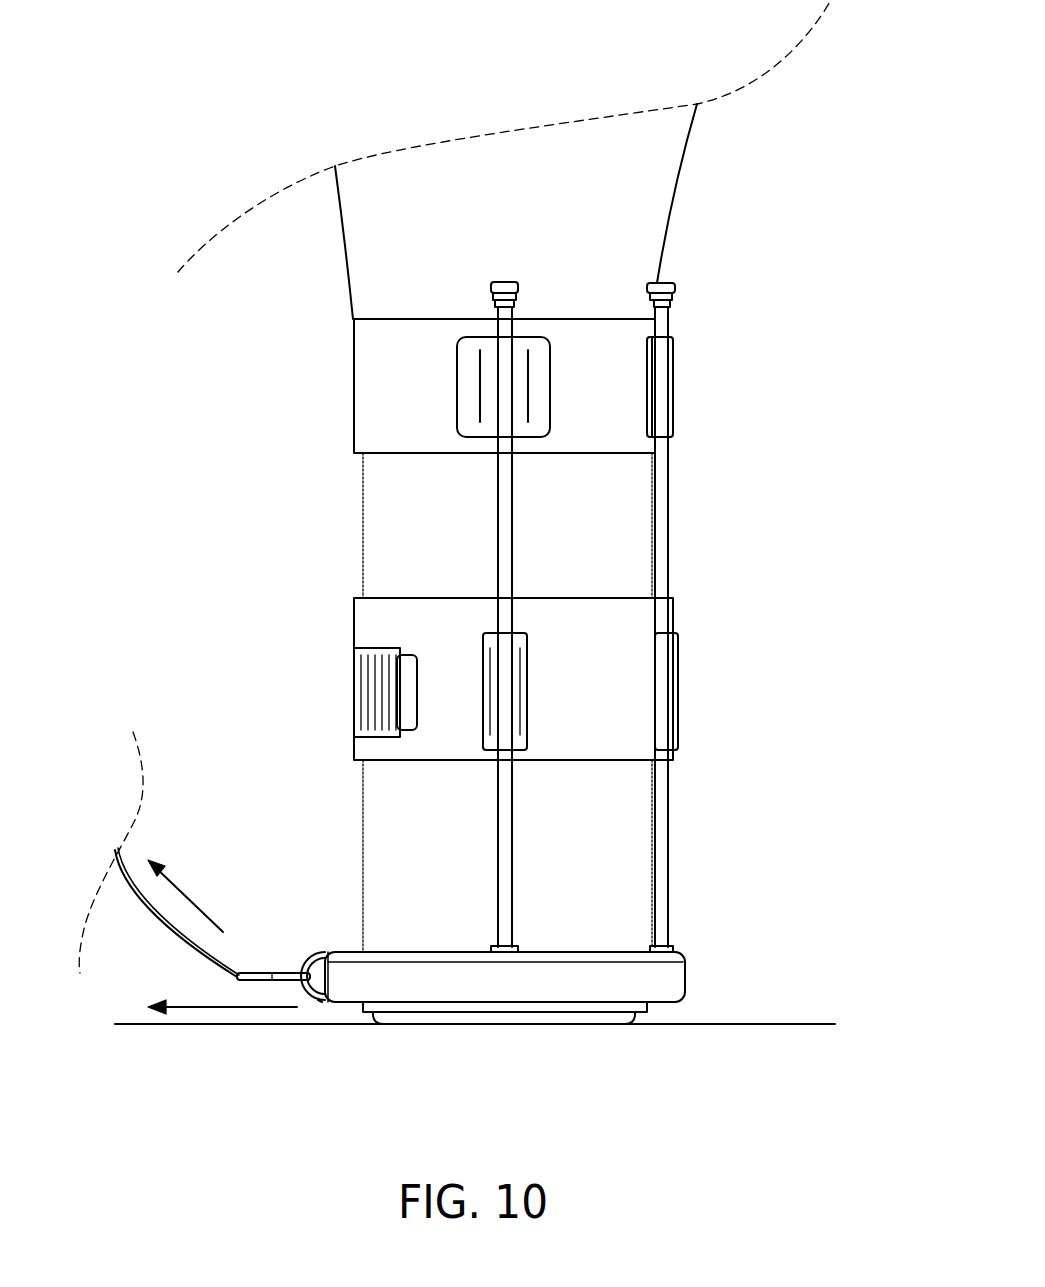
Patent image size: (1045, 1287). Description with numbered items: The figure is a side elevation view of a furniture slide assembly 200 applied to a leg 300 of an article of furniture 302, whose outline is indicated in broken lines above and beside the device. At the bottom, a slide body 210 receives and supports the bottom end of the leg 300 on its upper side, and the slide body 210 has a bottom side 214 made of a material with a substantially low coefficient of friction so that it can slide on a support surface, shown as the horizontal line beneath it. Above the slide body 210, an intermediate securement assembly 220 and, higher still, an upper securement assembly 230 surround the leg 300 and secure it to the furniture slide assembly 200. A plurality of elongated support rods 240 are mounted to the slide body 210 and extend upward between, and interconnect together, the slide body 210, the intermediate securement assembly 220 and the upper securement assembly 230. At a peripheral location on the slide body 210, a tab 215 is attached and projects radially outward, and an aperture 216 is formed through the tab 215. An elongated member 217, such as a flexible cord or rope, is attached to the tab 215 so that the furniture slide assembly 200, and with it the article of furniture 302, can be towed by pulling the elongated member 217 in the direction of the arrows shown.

The article of furniture 302 is at (833, 8).
The furniture slide assembly 200 is at (792, 226).
The upper securement assembly 230 is at (332, 394).
The leg 300 is at (602, 538).
The intermediate securement assembly 220 is at (681, 610).
The elongated support rods 240 is at (653, 847).
The slide body 210 is at (696, 964).
The bottom side 214 is at (558, 1026).
The tab 215 is at (306, 960).
The aperture 216 is at (318, 1005).
The elongated member 217 is at (150, 915).